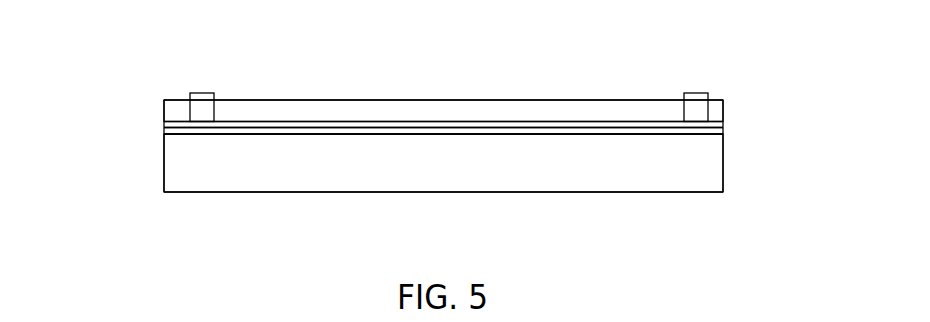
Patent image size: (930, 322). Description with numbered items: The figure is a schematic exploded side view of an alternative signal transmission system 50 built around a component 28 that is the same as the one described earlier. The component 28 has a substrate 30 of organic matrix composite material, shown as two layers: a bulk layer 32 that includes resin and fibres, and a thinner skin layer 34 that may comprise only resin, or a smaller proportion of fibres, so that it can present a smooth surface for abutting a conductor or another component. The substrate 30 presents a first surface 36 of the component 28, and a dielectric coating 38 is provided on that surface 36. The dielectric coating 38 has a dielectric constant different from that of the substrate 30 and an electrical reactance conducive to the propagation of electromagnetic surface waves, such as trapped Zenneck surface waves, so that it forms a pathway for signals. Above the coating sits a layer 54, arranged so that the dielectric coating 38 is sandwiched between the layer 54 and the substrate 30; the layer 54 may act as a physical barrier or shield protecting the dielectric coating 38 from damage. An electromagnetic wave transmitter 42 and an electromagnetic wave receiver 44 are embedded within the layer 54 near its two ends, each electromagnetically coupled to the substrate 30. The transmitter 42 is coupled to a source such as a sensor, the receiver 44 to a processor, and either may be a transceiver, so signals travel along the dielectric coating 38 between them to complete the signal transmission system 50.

The signal transmission system 50 is at (110, 99).
The component 28 is at (481, 83).
The layer 54 is at (337, 112).
The electromagnetic wave transmitter 42 is at (202, 93).
The electromagnetic wave receiver 44 is at (681, 105).
The first surface 36 is at (310, 134).
The dielectric coating 38 is at (198, 134).
The substrate 30 is at (443, 163).
The bulk layer 32 is at (699, 158).
The skin layer 34 is at (709, 181).